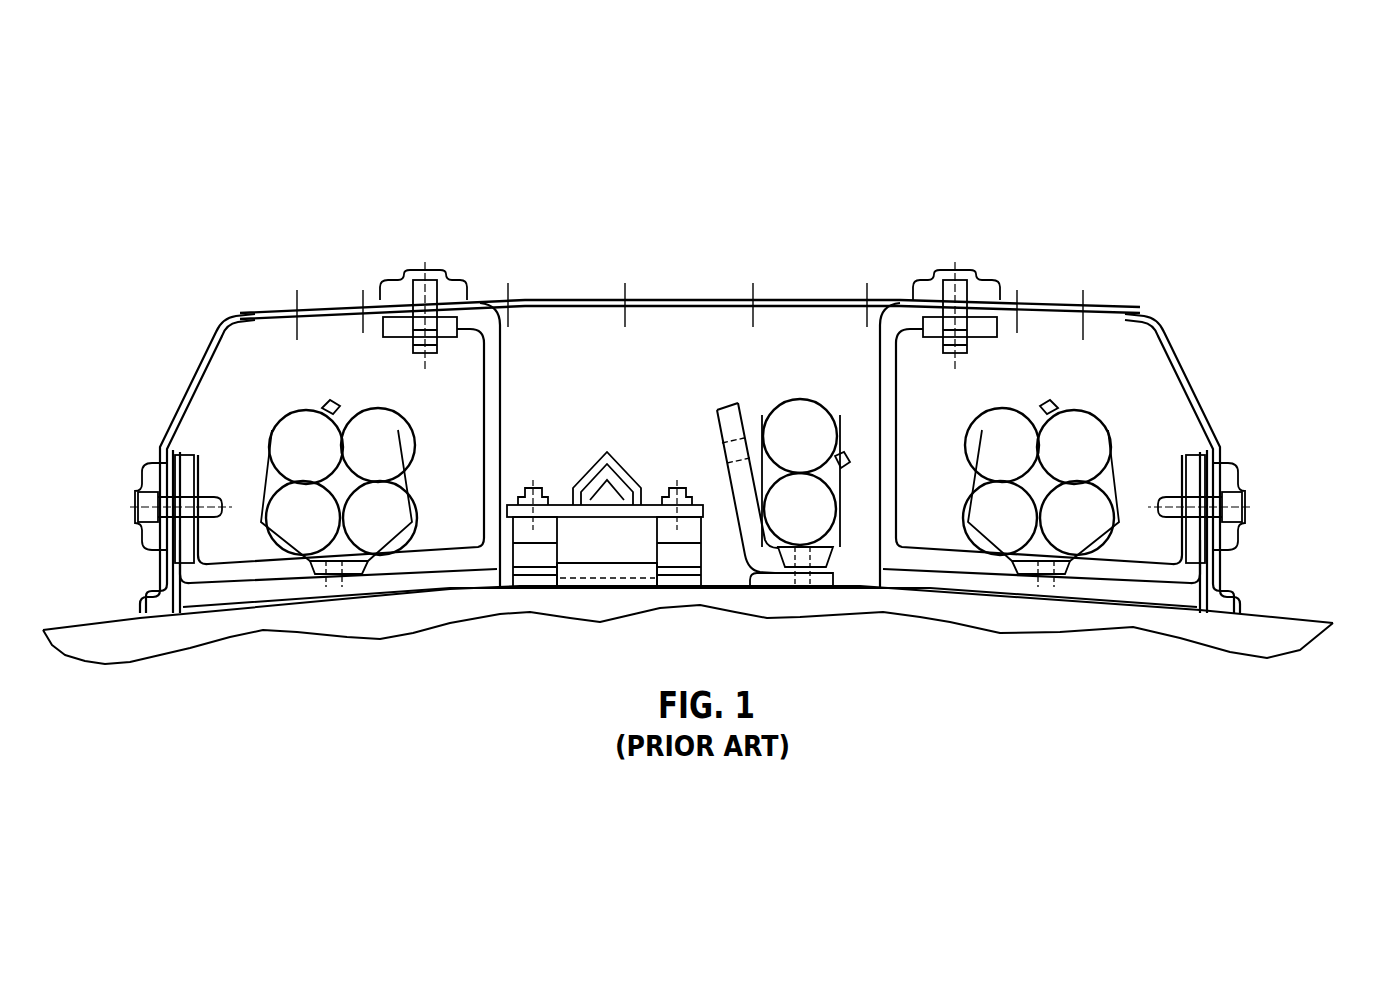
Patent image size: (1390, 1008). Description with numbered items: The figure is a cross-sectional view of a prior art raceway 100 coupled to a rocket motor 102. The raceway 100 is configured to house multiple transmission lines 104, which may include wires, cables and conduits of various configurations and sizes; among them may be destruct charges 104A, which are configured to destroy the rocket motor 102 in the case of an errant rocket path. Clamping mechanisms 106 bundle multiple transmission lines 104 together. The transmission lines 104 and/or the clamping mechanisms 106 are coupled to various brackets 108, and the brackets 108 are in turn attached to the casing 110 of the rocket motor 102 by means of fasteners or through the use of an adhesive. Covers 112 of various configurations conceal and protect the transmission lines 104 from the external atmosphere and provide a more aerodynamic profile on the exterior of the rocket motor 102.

The raceway 100 is at (707, 231).
The rocket motor 102 is at (1293, 592).
The transmission lines 104 is at (346, 405).
The destruct charges 104A is at (608, 500).
The clamping mechanisms 106 is at (413, 457).
The brackets 108 is at (500, 372).
The casing 110 is at (88, 622).
The covers 112 is at (830, 302).